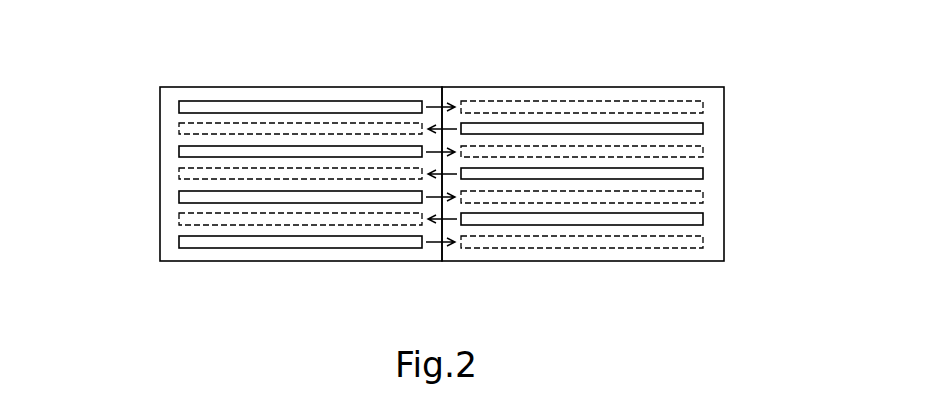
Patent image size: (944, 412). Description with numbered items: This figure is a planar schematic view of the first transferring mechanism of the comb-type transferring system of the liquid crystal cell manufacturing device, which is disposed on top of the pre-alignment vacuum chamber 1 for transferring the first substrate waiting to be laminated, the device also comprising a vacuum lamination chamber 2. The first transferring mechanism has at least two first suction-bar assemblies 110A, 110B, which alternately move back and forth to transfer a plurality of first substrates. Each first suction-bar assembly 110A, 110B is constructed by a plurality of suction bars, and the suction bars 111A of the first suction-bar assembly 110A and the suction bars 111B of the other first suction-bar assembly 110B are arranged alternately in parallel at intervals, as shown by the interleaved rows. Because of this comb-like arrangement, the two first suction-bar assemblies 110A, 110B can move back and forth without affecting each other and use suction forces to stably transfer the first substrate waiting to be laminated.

The pre-alignment vacuum chamber 1 is at (302, 87).
The vacuum lamination chamber 2 is at (585, 87).
The first suction-bar assembly 110A is at (220, 178).
The suction bars 111A is at (179, 107).
The first suction-bar assembly 110B is at (663, 173).
The suction bars 111B is at (703, 128).